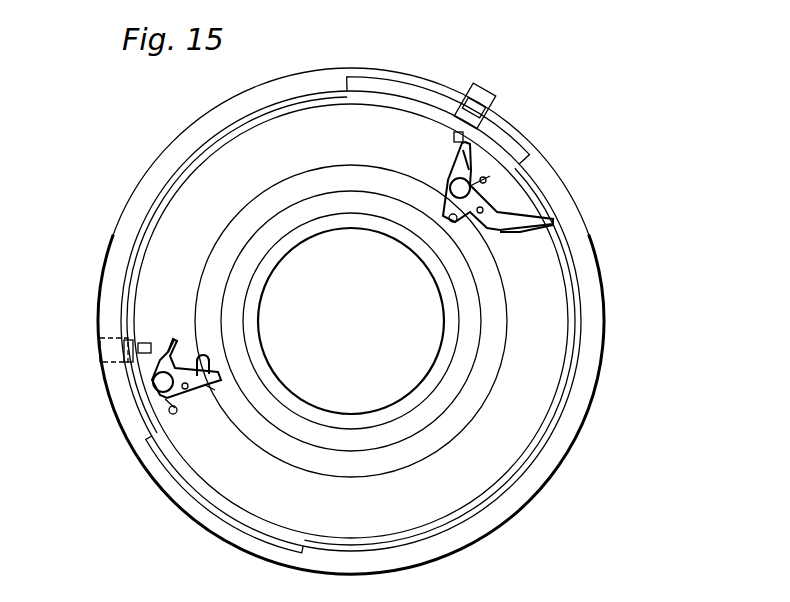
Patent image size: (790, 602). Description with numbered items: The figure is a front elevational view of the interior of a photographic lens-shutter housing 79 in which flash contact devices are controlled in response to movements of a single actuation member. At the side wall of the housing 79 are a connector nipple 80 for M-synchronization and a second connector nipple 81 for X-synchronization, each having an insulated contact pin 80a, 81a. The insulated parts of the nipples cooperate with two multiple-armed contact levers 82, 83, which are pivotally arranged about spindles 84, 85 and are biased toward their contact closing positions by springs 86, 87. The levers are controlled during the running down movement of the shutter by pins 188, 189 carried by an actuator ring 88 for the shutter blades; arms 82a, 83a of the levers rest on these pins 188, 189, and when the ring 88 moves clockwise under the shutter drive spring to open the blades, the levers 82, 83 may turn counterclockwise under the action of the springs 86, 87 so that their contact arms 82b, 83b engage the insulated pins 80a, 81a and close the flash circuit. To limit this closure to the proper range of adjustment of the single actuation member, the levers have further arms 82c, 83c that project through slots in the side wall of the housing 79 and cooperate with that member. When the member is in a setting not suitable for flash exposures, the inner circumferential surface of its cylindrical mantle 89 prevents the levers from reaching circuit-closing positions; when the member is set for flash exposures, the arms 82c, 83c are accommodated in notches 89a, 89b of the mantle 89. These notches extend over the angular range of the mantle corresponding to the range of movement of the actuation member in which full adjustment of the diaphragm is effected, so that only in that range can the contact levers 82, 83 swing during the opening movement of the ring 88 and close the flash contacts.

The housing 79 is at (578, 298).
The connector nipple 80 is at (488, 100).
The insulated contact pin 80a is at (455, 137).
The connector nipple 81 is at (110, 345).
The insulated contact pin 81a is at (140, 350).
The contact lever 82 is at (483, 198).
The arm 82a is at (450, 219).
The contact arm 82b is at (467, 159).
The arm 82c is at (530, 216).
The contact lever 83 is at (165, 396).
The arm 83a is at (185, 392).
The contact arm 83b is at (168, 352).
The arm 83c is at (156, 386).
The spindle 84 is at (451, 191).
The spindle 85 is at (172, 402).
The spring 86 is at (485, 182).
The spring 87 is at (170, 412).
The actuator ring 88 is at (411, 455).
The mantle 89 is at (576, 410).
The notch 89a is at (396, 90).
The notch 89b is at (178, 482).
The pin 188 is at (478, 212).
The pin 189 is at (200, 360).